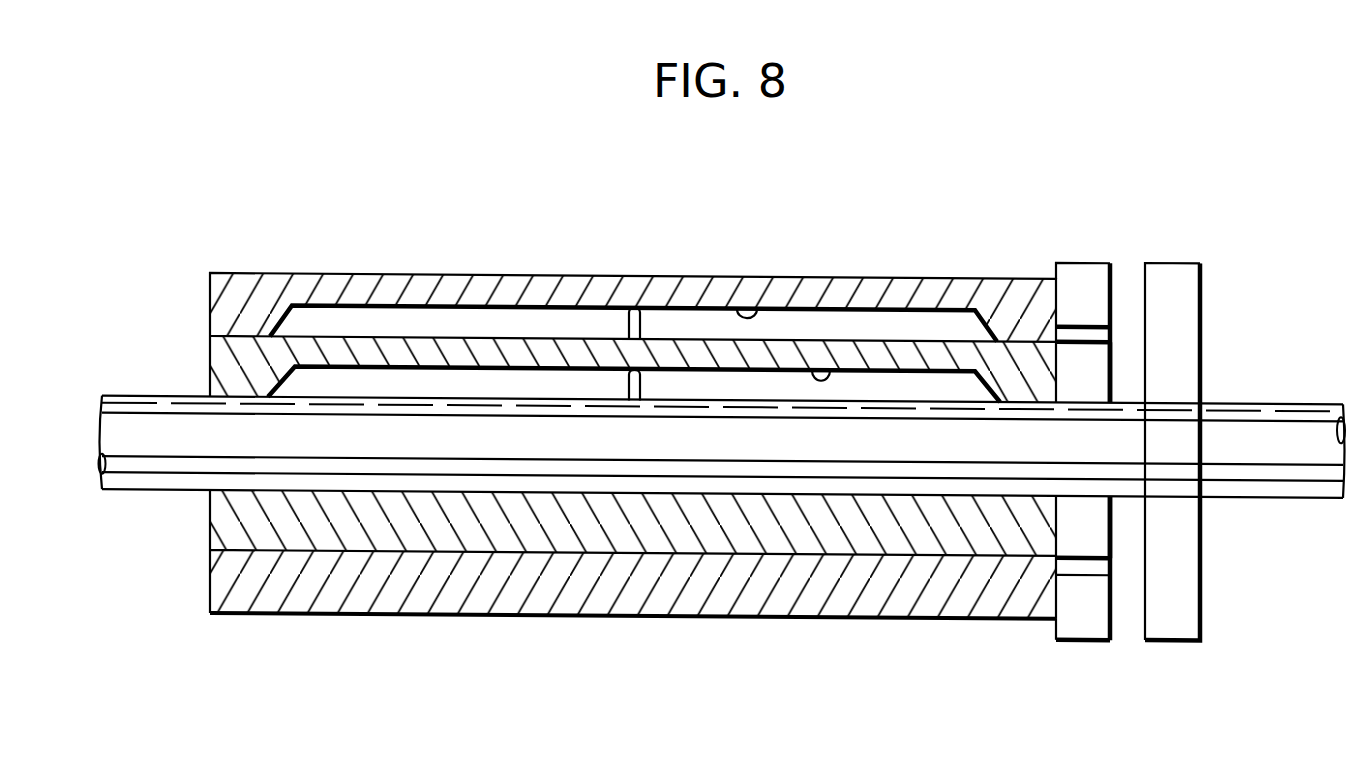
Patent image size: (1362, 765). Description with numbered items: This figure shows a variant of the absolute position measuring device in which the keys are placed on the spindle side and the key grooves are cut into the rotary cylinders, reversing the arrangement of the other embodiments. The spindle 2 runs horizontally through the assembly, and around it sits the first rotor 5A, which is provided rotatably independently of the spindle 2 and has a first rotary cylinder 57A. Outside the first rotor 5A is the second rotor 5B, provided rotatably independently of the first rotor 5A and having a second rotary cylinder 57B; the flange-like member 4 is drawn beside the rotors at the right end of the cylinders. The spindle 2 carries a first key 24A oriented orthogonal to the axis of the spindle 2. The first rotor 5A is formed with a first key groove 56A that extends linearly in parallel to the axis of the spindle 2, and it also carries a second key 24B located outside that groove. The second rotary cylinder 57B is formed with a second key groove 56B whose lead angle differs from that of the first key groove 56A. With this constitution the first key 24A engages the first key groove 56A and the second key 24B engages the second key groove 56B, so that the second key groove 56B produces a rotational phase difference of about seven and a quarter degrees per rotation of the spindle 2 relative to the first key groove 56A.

The spindle 2 is at (1275, 427).
The flange 4 is at (1187, 280).
The first rotor 5A is at (1100, 362).
The second rotor 5B is at (1075, 272).
The first key 24A is at (627, 397).
The second key 24B is at (636, 311).
The first key groove 56A is at (828, 370).
The second key groove 56B is at (748, 309).
The first rotary cylinder 57A is at (218, 358).
The second rotary cylinder 57B is at (218, 303).